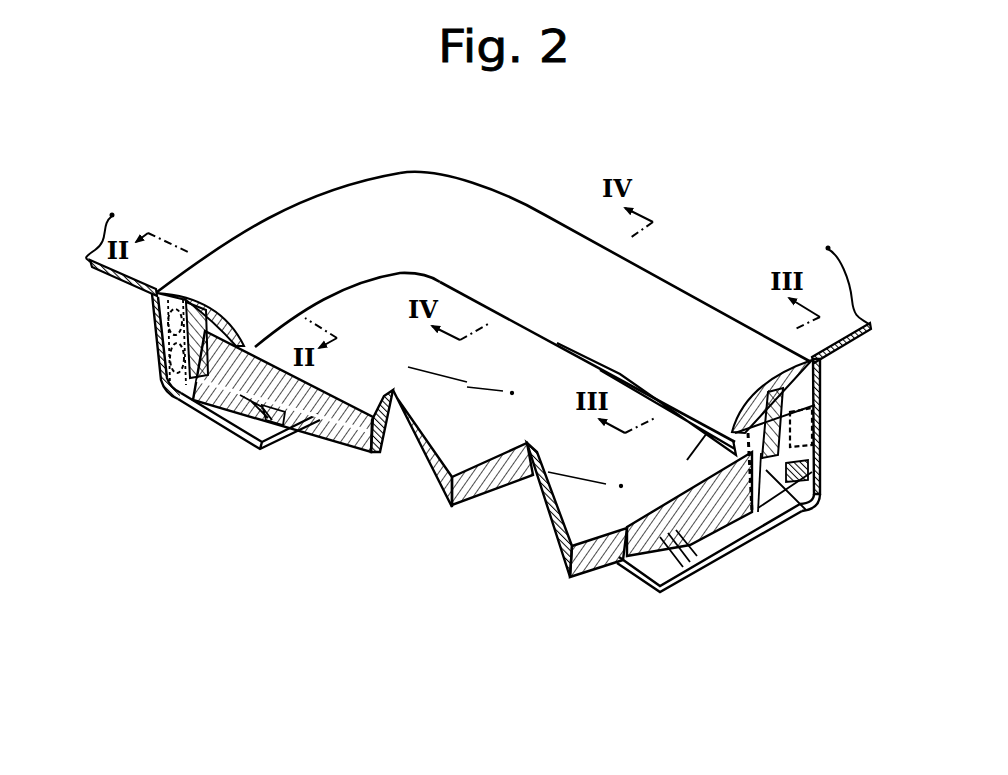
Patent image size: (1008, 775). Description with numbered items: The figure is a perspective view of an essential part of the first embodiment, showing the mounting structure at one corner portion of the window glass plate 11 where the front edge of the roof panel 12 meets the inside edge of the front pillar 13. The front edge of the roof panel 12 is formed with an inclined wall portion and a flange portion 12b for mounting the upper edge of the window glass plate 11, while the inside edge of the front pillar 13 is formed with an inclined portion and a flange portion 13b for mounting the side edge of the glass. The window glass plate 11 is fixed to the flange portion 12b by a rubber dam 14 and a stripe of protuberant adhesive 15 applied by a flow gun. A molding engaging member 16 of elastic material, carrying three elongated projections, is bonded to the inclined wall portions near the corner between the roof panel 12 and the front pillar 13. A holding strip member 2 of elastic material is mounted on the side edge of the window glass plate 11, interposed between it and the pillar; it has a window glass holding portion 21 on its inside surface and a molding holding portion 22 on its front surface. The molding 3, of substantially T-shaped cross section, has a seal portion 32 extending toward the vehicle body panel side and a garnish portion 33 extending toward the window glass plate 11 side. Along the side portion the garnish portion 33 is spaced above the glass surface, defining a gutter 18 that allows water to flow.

The holding strip member 2 is at (815, 495).
The molding 3 is at (307, 228).
The window glass plate 11 is at (432, 479).
The roof panel 12 is at (124, 291).
The flange portion 12b is at (278, 445).
The front pillar 13 is at (853, 342).
The flange portion 13b is at (667, 597).
The rubber dam 14 is at (237, 432).
The protuberant adhesive 15 is at (212, 415).
The molding engaging member 16 is at (160, 338).
The gutter 18 is at (652, 396).
The window glass holding portion 21 is at (704, 436).
The molding holding portion 22 is at (815, 477).
The seal portion 32 is at (242, 249).
The garnish portion 33 is at (335, 294).